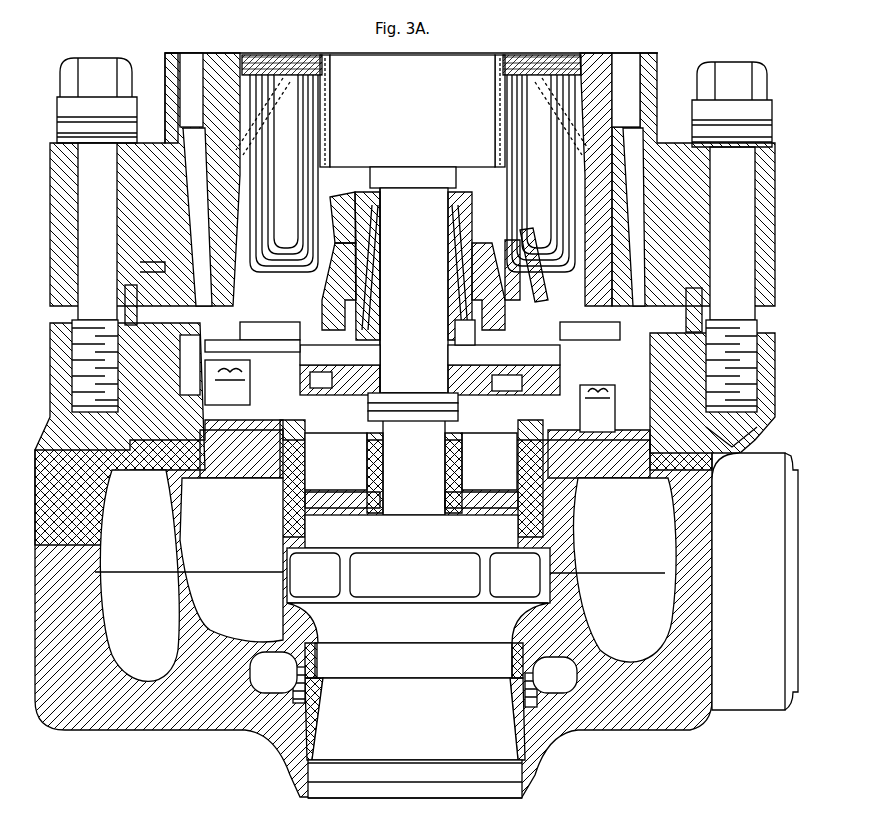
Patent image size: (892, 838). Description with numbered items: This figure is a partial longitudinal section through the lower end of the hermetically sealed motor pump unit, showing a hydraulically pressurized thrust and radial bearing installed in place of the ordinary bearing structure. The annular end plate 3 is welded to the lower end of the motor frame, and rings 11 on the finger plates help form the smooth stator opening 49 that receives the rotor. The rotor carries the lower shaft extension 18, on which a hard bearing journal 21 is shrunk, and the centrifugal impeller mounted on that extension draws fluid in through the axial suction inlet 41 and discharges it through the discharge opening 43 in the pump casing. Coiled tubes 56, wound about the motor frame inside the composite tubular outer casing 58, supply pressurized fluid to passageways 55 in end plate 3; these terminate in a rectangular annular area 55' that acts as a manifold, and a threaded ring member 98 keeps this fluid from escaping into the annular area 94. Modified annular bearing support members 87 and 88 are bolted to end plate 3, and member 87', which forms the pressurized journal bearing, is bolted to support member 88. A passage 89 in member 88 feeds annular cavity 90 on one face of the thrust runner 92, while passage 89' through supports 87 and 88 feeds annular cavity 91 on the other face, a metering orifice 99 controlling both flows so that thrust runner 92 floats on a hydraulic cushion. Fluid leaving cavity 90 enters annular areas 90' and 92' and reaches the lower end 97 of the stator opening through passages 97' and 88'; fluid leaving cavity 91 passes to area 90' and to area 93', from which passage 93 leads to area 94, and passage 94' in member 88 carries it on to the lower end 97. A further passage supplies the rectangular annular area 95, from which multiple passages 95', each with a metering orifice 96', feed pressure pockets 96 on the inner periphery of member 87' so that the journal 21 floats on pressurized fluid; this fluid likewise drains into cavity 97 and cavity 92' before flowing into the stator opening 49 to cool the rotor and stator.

The end plate 3 is at (170, 214).
The rings 11 is at (328, 105).
The lower shaft extension 18 is at (430, 284).
The bearing journal 21 is at (392, 290).
The axial suction inlet 41 is at (480, 792).
The discharge opening 43 is at (793, 658).
The stator opening 49 is at (330, 140).
The passageways 55 is at (388, 217).
The rectangular shaped annular area 55' is at (126, 268).
The coiled tubes 56 is at (191, 62).
The outer casing 58 is at (166, 58).
The bearing support member 87 is at (227, 388).
The pressurized journal bearing member 87' is at (348, 210).
The bearing support member 88 is at (199, 365).
The passage 88' is at (449, 334).
The passage 89 is at (303, 327).
The passage 89' is at (597, 408).
The annular cavity 90 is at (430, 341).
The annular area 90' is at (416, 381).
The annular cavity 91 is at (440, 395).
The thrust runner 92 is at (430, 378).
The annular area 92' is at (430, 344).
The passage 93 is at (413, 422).
The area 93' is at (413, 407).
The annular area 94 is at (342, 434).
The passage 94' is at (707, 401).
The rectangular shaped annular area 95 is at (508, 264).
The passages 95' is at (413, 286).
The pressure pockets 96 is at (382, 267).
The metering orifice 96' is at (425, 267).
The lower end of stator opening 97 is at (413, 266).
The passage 97' is at (535, 270).
The ring member 98 is at (125, 300).
The metering orifice 99 is at (590, 274).